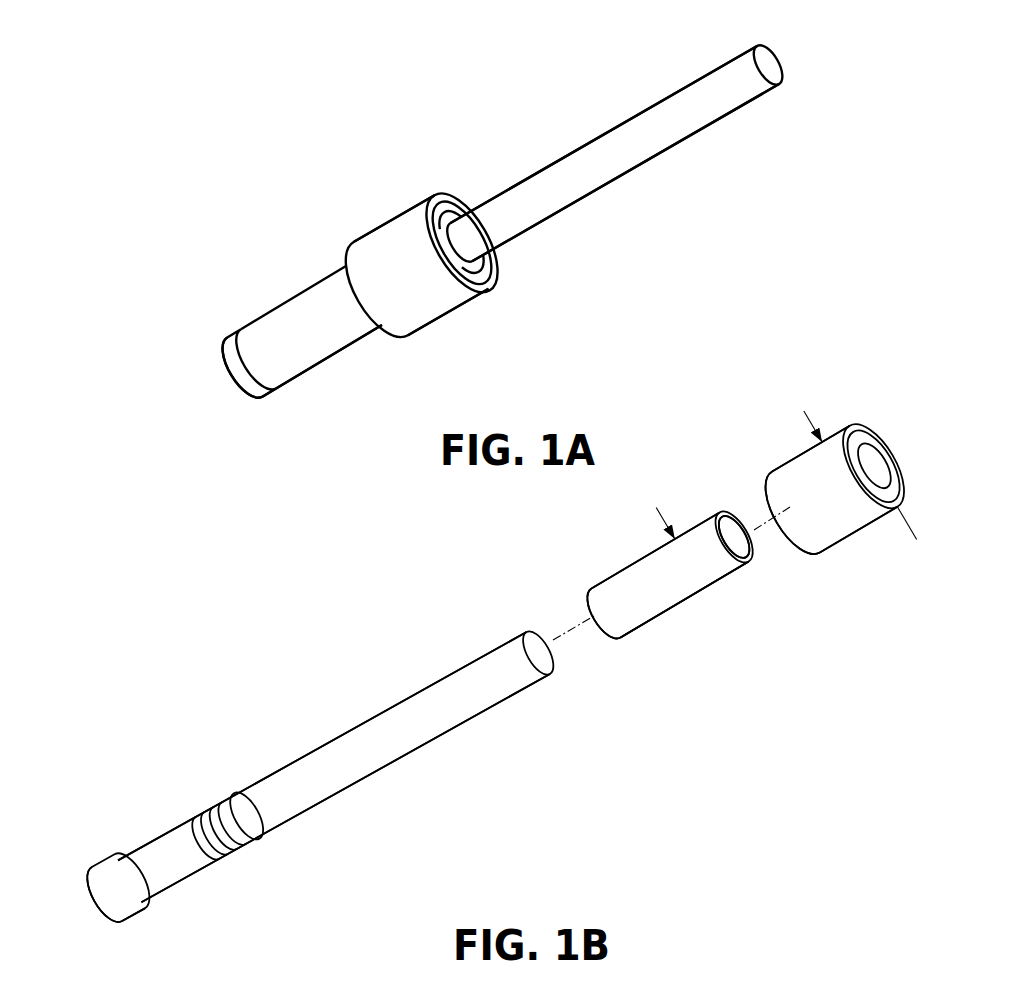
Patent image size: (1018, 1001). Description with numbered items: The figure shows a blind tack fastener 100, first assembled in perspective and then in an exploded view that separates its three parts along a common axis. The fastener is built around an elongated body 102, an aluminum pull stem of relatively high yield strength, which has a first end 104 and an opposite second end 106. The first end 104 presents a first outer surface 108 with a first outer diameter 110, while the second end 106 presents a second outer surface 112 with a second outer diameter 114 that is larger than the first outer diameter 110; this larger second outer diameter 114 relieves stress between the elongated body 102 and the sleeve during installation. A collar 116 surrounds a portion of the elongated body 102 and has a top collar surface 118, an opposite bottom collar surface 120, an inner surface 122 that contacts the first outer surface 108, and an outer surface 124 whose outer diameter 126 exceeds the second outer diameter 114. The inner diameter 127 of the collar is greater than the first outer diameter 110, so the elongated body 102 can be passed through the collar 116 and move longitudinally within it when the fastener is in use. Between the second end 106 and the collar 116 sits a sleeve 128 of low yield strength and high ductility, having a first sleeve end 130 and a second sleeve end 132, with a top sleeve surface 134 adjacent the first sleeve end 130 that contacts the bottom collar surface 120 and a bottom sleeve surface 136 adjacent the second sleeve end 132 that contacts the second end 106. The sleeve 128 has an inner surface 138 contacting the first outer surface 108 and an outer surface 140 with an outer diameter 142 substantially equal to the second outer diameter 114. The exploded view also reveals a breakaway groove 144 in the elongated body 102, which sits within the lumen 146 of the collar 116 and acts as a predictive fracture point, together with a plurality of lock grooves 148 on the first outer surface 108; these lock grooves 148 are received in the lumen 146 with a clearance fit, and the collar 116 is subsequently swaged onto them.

In FIG. 1A, the blind tack fastener 100 is at (174, 121).
In FIG. 1B, the blind tack fastener 100 is at (170, 645).
In FIG. 1A, the elongated body 102 is at (580, 147).
In FIG. 1B, the elongated body 102 is at (352, 729).
In FIG. 1A, the first end 104 is at (787, 63).
In FIG. 1B, the first end 104 is at (553, 655).
In FIG. 1A, the second end 106 is at (233, 367).
In FIG. 1B, the second end 106 is at (93, 896).
In FIG. 1A, the first outer surface 108 is at (652, 133).
In FIG. 1B, the first outer surface 108 is at (420, 715).
In FIG. 1A, the first outer diameter 110 is at (640, 154).
In FIG. 1B, the first outer diameter 110 is at (362, 763).
In FIG. 1A, the second outer surface 112 is at (241, 351).
In FIG. 1B, the second outer surface 112 is at (113, 903).
In FIG. 1A, the second outer diameter 114 is at (283, 373).
In FIG. 1B, the second outer diameter 114 is at (145, 893).
In FIG. 1A, the collar 116 is at (383, 224).
In FIG. 1B, the collar 116 is at (833, 435).
In FIG. 1A, the top collar surface 118 is at (497, 255).
In FIG. 1B, the top collar surface 118 is at (876, 434).
In FIG. 1A, the bottom collar surface 120 is at (392, 329).
In FIG. 1B, the bottom collar surface 120 is at (770, 470).
In FIG. 1B, the inner surface 122 is at (882, 451).
In FIG. 1A, the outer surface 124 is at (450, 290).
In FIG. 1B, the outer surface 124 is at (845, 484).
In FIG. 1B, the outer diameter 126 is at (884, 542).
In FIG. 1B, the inner diameter 127 is at (918, 523).
In FIG. 1A, the sleeve 128 is at (286, 306).
In FIG. 1B, the sleeve 128 is at (695, 527).
In FIG. 1B, the first sleeve end 130 is at (754, 566).
In FIG. 1B, the second sleeve end 132 is at (590, 585).
In FIG. 1B, the top sleeve surface 134 is at (753, 552).
In FIG. 1B, the bottom sleeve surface 136 is at (589, 600).
In FIG. 1B, the inner surface 138 is at (748, 539).
In FIG. 1A, the outer surface 140 is at (302, 354).
In FIG. 1B, the outer surface 140 is at (662, 580).
In FIG. 1B, the outer diameter 142 is at (685, 620).
In FIG. 1B, the breakaway groove 144 is at (246, 798).
In FIG. 1B, the lumen 146 is at (881, 465).
In FIG. 1B, the lock grooves 148 is at (207, 814).